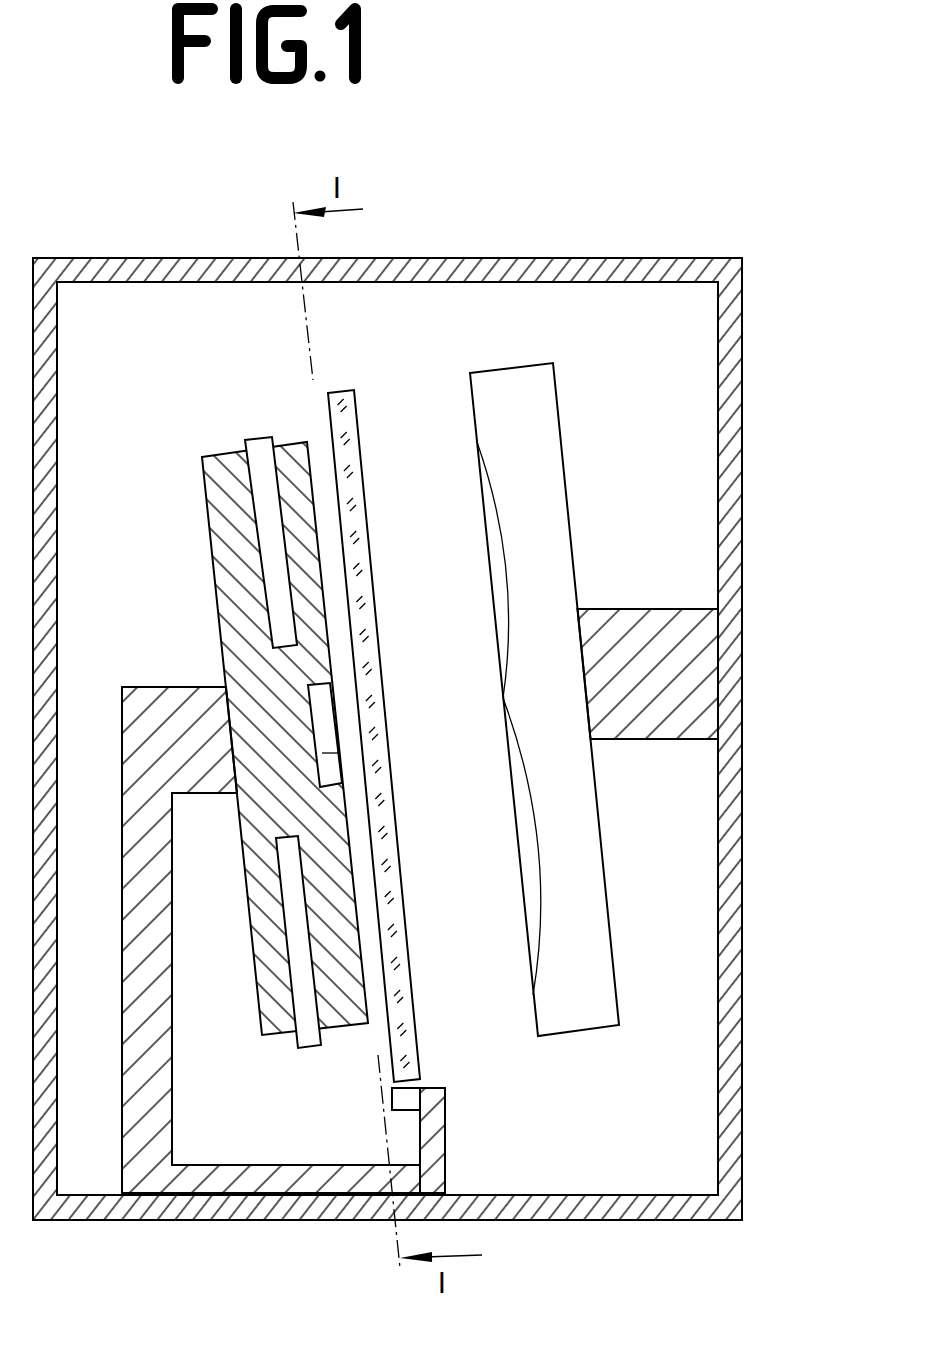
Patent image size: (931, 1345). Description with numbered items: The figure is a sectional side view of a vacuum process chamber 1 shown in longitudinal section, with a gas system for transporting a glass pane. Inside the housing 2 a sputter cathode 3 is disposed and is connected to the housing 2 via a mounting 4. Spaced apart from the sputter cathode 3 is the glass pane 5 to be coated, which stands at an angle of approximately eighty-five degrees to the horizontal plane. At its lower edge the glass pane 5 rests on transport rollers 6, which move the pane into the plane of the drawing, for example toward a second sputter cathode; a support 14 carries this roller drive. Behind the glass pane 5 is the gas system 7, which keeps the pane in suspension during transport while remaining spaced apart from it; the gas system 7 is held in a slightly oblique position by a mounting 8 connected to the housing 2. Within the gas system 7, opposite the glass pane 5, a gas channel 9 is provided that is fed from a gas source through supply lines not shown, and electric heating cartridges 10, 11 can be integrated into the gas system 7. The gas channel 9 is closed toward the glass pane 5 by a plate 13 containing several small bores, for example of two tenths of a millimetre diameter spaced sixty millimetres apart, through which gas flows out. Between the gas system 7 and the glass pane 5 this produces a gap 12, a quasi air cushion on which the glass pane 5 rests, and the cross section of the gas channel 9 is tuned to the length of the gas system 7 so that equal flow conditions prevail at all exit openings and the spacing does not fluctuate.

The vacuum process chamber 1 is at (657, 247).
The housing 2 is at (722, 437).
The sputter cathode 3 is at (543, 419).
The mounting 4 is at (640, 633).
The glass pane 5 is at (356, 490).
The transport rollers 6 is at (405, 1100).
The gas system 7 is at (232, 625).
The mounting 8 is at (158, 725).
The gas channel 9 is at (347, 767).
The electric heating cartridge 10 is at (258, 445).
The electric heating cartridge 11 is at (310, 1049).
The gap 12 is at (320, 470).
The plate 13 is at (340, 707).
The support 14 is at (435, 1080).